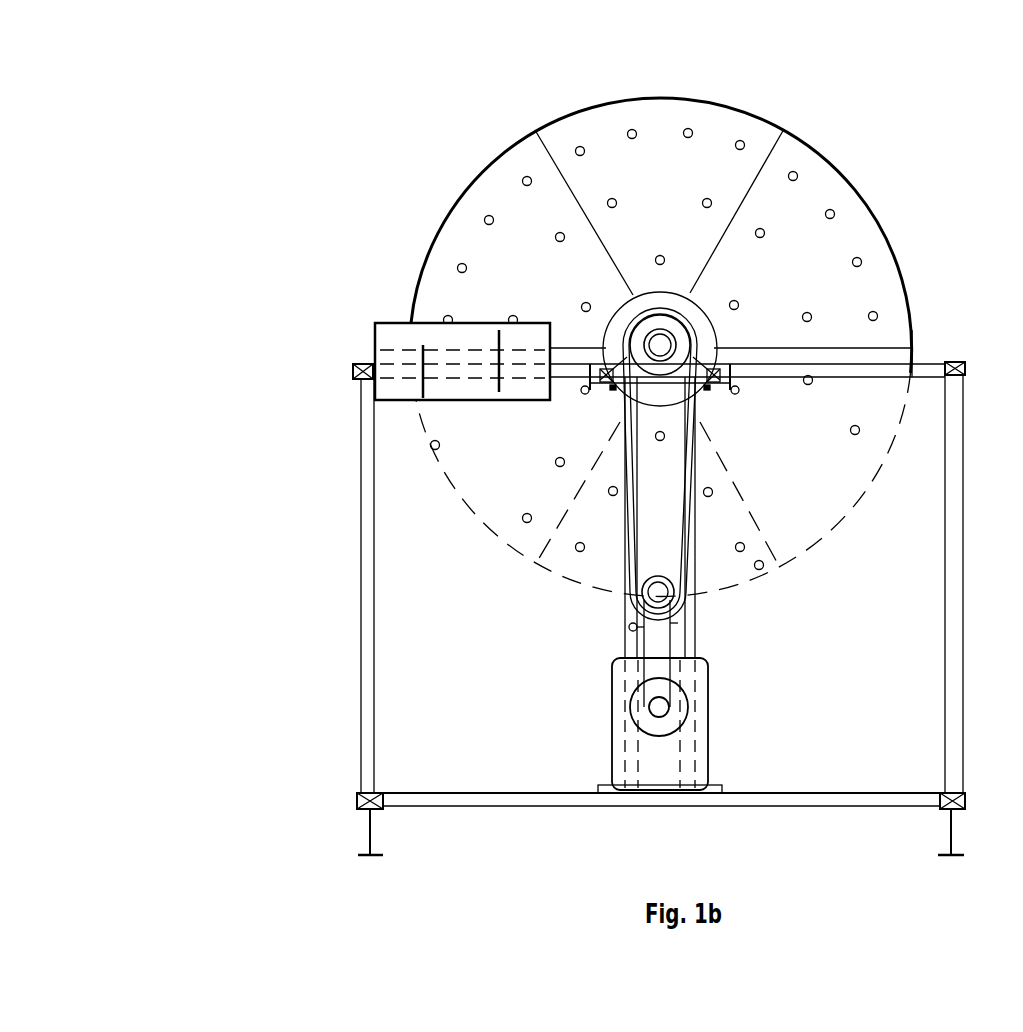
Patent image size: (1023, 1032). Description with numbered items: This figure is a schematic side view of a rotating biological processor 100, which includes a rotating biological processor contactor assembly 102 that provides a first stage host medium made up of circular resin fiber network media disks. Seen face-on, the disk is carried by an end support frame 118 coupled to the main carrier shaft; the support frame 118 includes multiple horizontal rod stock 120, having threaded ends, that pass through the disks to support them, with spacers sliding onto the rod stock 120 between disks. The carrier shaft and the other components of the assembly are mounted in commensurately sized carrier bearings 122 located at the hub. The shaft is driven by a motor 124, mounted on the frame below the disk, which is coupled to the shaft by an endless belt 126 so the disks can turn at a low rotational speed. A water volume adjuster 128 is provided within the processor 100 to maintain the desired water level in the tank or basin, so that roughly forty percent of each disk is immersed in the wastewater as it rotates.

The rotating biological processor 100 is at (234, 55).
The rotating biological processor contactor assembly 102 is at (417, 139).
The end support frame 118 is at (868, 215).
The horizontal rod stock 120 is at (583, 146).
The carrier bearings 122 is at (677, 330).
The motor 124 is at (700, 684).
The endless belt 126 is at (697, 521).
The water volume adjuster 128 is at (388, 323).